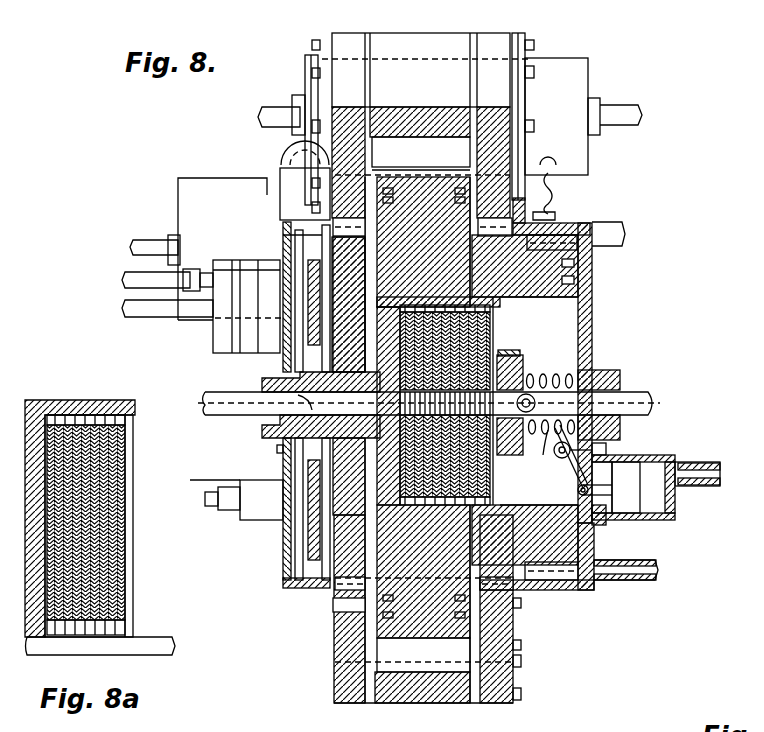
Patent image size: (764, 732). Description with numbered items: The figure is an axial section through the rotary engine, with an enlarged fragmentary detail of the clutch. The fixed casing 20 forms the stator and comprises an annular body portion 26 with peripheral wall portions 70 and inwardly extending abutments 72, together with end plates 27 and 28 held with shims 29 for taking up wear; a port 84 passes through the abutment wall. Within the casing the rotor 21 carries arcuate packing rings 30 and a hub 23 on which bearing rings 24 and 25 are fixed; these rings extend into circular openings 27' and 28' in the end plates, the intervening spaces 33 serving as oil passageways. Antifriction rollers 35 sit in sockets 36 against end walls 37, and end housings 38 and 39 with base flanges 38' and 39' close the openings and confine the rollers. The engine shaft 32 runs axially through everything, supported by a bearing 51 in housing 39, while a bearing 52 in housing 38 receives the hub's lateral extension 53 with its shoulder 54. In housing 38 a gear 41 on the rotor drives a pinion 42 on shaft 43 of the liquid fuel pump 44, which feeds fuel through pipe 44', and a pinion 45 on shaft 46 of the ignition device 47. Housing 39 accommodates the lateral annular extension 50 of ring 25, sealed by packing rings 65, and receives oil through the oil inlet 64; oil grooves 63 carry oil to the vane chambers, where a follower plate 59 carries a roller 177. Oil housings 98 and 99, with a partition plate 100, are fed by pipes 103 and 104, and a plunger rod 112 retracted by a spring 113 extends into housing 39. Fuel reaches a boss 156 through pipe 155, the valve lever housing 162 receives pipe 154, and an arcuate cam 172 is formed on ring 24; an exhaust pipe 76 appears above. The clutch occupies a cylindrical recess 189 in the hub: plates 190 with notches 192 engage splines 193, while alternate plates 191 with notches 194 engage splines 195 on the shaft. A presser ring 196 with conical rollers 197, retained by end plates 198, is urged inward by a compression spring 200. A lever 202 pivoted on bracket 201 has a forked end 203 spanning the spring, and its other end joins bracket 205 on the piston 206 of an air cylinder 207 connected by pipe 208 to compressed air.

In FIG. 8, the fixed casing 20 is at (313, 36).
In FIG. 8, the rotor 21 is at (400, 660).
In FIG. 8, the hub 23 is at (300, 366).
In FIG. 8A, the hub 23 is at (33, 400).
In FIG. 8, the bearing ring 24 is at (322, 255).
In FIG. 8, the bearing ring 25 is at (540, 232).
In FIG. 8, the annular body portion 26 is at (444, 27).
In FIG. 8, the end plate 27 is at (327, 355).
In FIG. 8, the circular opening 27' is at (393, 182).
In FIG. 8, the end plate 28 is at (514, 356).
In FIG. 8, the circular opening 28' is at (457, 182).
In FIG. 8, the shims 29 is at (470, 71).
In FIG. 8, the arcuate packing rings 30 is at (455, 175).
In FIG. 8, the engine shaft 32 is at (650, 396).
In FIG. 8A, the engine shaft 32 is at (140, 650).
In FIG. 8, the intervening spaces 33 is at (455, 570).
In FIG. 8, the antifriction rollers 35 is at (318, 205).
In FIG. 8, the sockets 36 is at (340, 615).
In FIG. 8, the end walls 37 is at (345, 625).
In FIG. 8, the end housing 38 is at (281, 389).
In FIG. 8, the base flange 38' is at (273, 616).
In FIG. 8, the end housing 39 is at (602, 373).
In FIG. 8, the base flange 39' is at (537, 578).
In FIG. 8, the gear 41 is at (277, 450).
In FIG. 8, the pinion 42 is at (308, 268).
In FIG. 8, the shaft 43 is at (295, 305).
In FIG. 8, the liquid fuel pump 44 is at (173, 318).
In FIG. 8, the pipe 44' is at (160, 321).
In FIG. 8, the pinion 45 is at (308, 540).
In FIG. 8, the shaft 46 is at (283, 518).
In FIG. 8, the ignition device 47 is at (255, 512).
In FIG. 8, the lateral annular extension 50 is at (555, 236).
In FIG. 8, the bearing 51 is at (620, 382).
In FIG. 8, the bearing 52 is at (262, 382).
In FIG. 8, the lateral extension 53 is at (270, 388).
In FIG. 8, the shoulder 54 is at (298, 406).
In FIG. 8, the follower plate 59 is at (518, 660).
In FIG. 8, the oil grooves 63 is at (305, 605).
In FIG. 8, the oil inlet 64 is at (625, 582).
In FIG. 8, the packing rings 65 is at (576, 268).
In FIG. 8, the peripheral wall portions 70 is at (425, 112).
In FIG. 8, the abutments 72 is at (420, 128).
In FIG. 8, the exhaust pipe 76 is at (626, 236).
In FIG. 8, the port 84 is at (452, 125).
In FIG. 8, the oil housing 98 is at (305, 88).
In FIG. 8, the oil housing 99 is at (582, 72).
In FIG. 8, the partition plate 100 is at (520, 60).
In FIG. 8, the pipe 103 is at (275, 120).
In FIG. 8, the pipe 104 is at (625, 112).
In FIG. 8, the plunger rod 112 is at (557, 173).
In FIG. 8, the spring 113 is at (556, 200).
In FIG. 8, the pipe 154 is at (152, 245).
In FIG. 8, the pipe 155 is at (293, 92).
In FIG. 8, the boss 156 is at (282, 178).
In FIG. 8, the housing 162 is at (208, 180).
In FIG. 8, the arcuate cam 172 is at (300, 470).
In FIG. 8, the antifriction roller 177 is at (470, 690).
In FIG. 8, the cylindrical recess 189 is at (505, 468).
In FIG. 8, the clutch plates 190 is at (497, 326).
In FIG. 8A, the clutch plates 190 is at (115, 447).
In FIG. 8, the clutch plates 191 is at (497, 341).
In FIG. 8A, the clutch plates 191 is at (62, 415).
In FIG. 8A, the notches 192 is at (120, 415).
In FIG. 8A, the splines 193 is at (98, 415).
In FIG. 8A, the notches 194 is at (85, 637).
In FIG. 8A, the splines 195 is at (60, 637).
In FIG. 8, the presser ring 196 is at (548, 420).
In FIG. 8, the conical anti-friction rollers 197 is at (520, 375).
In FIG. 8, the end plates 198 is at (522, 356).
In FIG. 8, the compression spring 200 is at (585, 372).
In FIG. 8, the bracket 201 is at (606, 448).
In FIG. 8, the lever 202 is at (568, 478).
In FIG. 8, the forked end 203 is at (544, 451).
In FIG. 8, the bracket 205 is at (624, 487).
In FIG. 8, the piston 206 is at (640, 504).
In FIG. 8, the air cylinder 207 is at (660, 522).
In FIG. 8, the pipe 208 is at (704, 463).